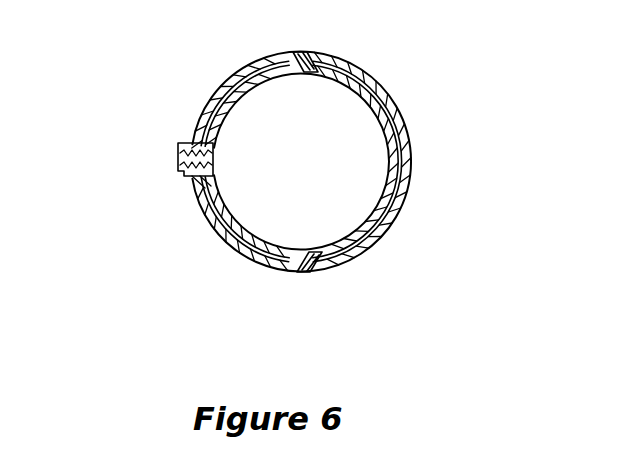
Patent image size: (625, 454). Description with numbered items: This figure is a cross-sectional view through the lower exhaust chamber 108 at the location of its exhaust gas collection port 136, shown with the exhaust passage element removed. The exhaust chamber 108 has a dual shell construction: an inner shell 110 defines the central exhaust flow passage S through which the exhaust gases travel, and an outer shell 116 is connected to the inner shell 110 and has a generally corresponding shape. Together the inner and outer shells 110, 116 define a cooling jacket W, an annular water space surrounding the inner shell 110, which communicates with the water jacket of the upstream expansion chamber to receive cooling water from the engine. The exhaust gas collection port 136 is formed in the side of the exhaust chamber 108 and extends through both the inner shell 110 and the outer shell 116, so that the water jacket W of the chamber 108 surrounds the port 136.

The lower exhaust chamber 108 is at (410, 187).
The inner shell 110 is at (363, 105).
The outer shell 116 is at (407, 150).
The exhaust gas collection port 136 is at (178, 159).
The cooling jacket W is at (325, 260).
The exhaust flow passage S is at (318, 185).